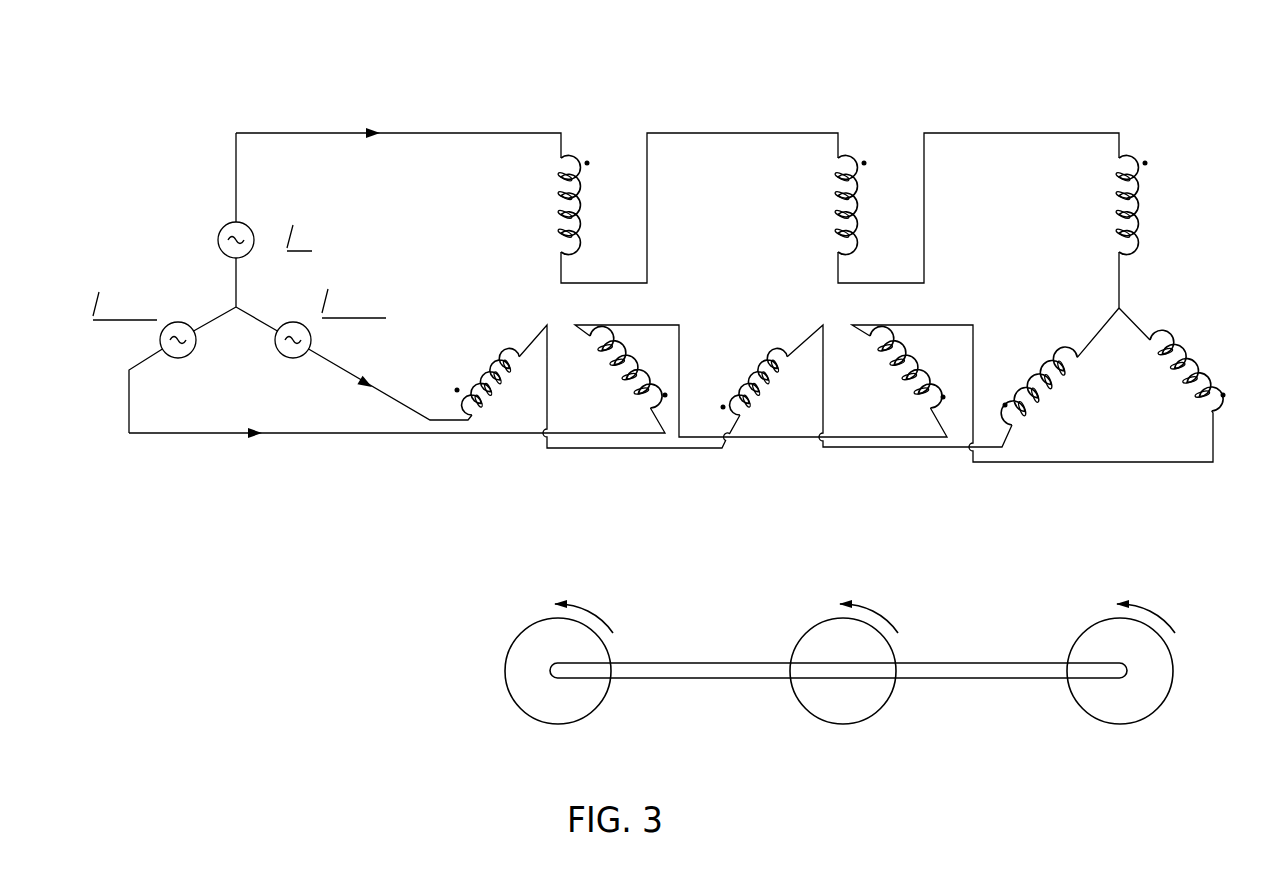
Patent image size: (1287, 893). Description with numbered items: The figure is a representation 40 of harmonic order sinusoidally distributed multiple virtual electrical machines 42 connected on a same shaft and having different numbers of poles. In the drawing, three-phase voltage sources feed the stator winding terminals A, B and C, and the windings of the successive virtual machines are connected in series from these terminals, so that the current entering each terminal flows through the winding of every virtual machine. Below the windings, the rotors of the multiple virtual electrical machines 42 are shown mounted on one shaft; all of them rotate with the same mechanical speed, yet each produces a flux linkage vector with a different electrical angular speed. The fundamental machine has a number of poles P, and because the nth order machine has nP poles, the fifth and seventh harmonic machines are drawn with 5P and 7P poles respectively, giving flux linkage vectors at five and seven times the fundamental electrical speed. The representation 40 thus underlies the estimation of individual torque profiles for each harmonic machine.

The representation 40 is at (1184, 83).
The multiple virtual electrical machines 42 is at (466, 591).
The phase A terminal A is at (398, 129).
The phase B terminal B is at (397, 438).
The phase C terminal C is at (390, 384).
The number of poles P is at (559, 662).
The number of poles of the fifth order machine 5P is at (844, 662).
The number of poles of the seventh order machine 7P is at (1121, 662).